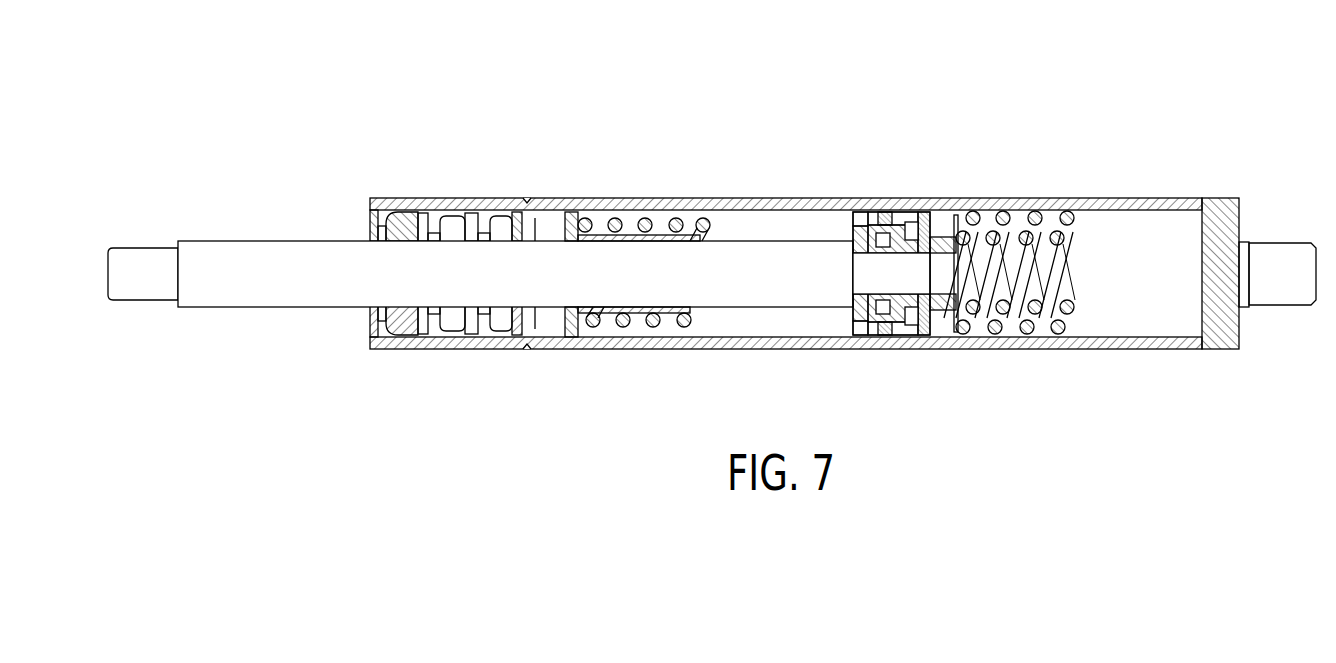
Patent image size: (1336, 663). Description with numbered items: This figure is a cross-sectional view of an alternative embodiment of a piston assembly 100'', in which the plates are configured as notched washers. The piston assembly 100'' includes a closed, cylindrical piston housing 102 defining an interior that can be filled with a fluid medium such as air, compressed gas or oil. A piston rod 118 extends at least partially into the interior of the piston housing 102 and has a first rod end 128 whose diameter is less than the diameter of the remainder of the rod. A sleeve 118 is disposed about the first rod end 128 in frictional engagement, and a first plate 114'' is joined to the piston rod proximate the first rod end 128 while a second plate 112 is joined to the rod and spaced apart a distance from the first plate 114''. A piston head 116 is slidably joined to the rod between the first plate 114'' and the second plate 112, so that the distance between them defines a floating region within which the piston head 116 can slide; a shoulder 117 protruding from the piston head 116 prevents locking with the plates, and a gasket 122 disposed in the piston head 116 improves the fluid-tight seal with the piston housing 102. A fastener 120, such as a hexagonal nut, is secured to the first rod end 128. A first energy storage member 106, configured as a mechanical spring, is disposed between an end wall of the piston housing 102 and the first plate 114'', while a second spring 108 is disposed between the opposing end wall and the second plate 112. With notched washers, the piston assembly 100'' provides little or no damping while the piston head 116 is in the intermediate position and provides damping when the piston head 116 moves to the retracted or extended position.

The piston assembly 100'' is at (712, 221).
The piston housing 102 is at (1107, 200).
The first energy storage member 106 is at (1060, 325).
The piston rod 108 is at (615, 307).
The second plate 112 is at (572, 220).
The first plate 114'' is at (890, 271).
The piston head 116 is at (898, 240).
The shoulder 117 is at (925, 215).
The sleeve 118 is at (744, 253).
The fastener 120 is at (945, 305).
The gasket 122 is at (885, 212).
The first rod end 128 is at (892, 283).